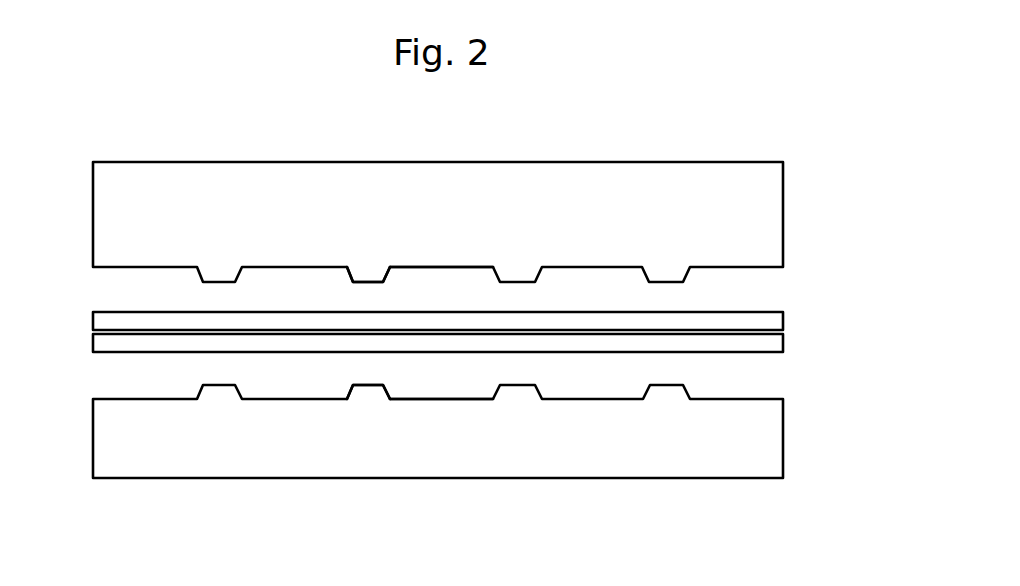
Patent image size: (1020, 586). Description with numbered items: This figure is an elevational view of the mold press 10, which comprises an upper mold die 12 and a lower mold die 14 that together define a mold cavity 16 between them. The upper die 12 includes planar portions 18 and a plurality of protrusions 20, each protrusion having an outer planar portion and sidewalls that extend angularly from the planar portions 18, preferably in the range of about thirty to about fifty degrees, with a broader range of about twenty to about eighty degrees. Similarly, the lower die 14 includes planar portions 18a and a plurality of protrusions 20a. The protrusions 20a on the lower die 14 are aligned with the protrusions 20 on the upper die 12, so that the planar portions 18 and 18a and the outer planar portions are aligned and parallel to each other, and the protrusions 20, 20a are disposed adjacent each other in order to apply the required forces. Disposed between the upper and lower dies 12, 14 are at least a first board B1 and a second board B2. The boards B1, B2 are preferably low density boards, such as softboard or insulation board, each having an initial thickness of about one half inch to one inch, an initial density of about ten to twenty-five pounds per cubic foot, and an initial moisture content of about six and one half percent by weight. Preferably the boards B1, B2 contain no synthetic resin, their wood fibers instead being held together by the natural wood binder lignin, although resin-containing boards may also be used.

The mold press 10 is at (108, 133).
The upper mold die 12 is at (304, 183).
The lower mold die 14 is at (633, 460).
The mold cavity 16 is at (85, 377).
The planar portions 18 is at (448, 274).
The planar portions 18a is at (437, 390).
The protrusions 20 is at (371, 270).
The protrusions 20a is at (371, 398).
The first board B1 is at (95, 318).
The second board B2 is at (95, 341).